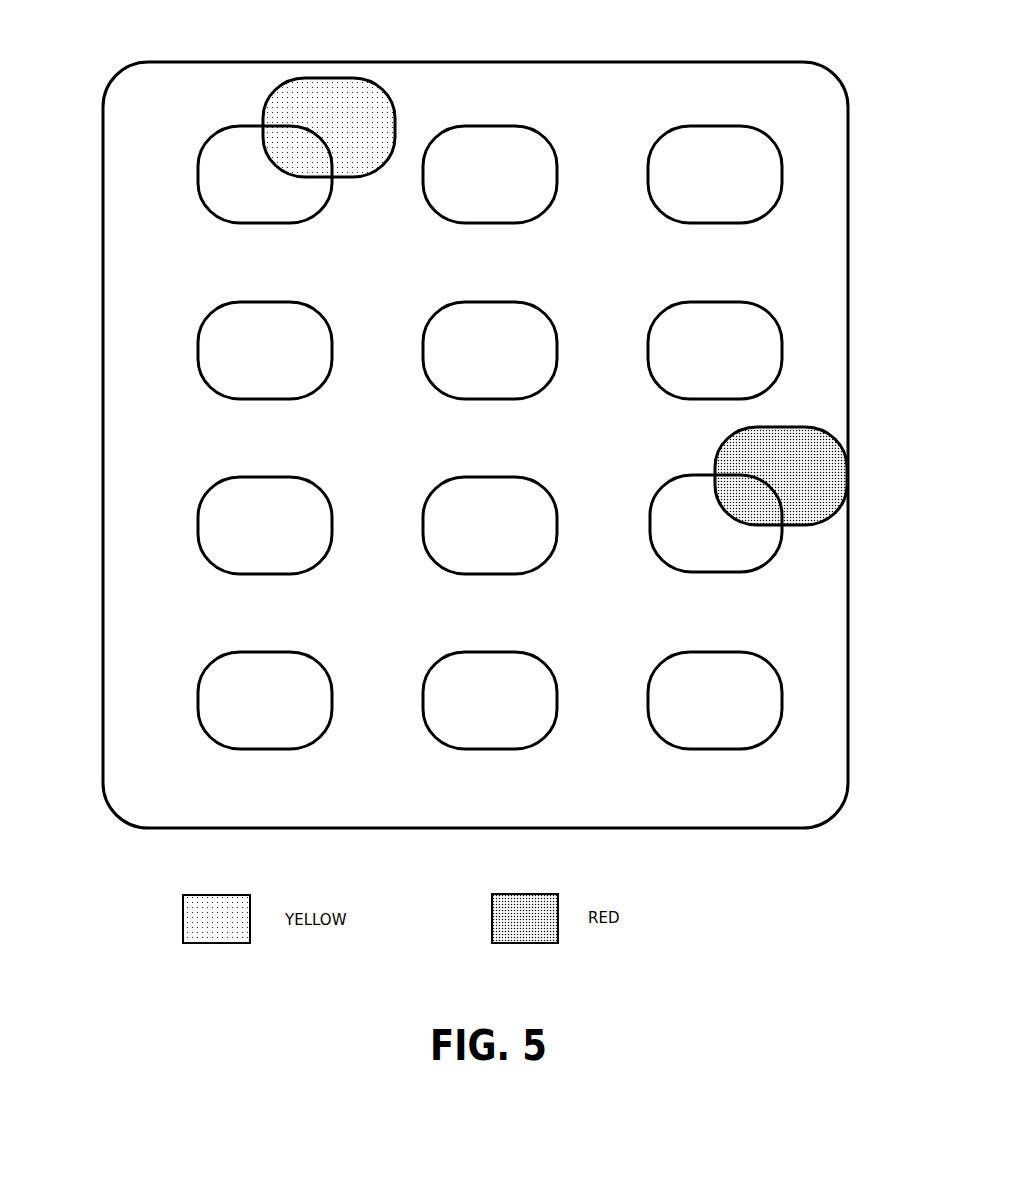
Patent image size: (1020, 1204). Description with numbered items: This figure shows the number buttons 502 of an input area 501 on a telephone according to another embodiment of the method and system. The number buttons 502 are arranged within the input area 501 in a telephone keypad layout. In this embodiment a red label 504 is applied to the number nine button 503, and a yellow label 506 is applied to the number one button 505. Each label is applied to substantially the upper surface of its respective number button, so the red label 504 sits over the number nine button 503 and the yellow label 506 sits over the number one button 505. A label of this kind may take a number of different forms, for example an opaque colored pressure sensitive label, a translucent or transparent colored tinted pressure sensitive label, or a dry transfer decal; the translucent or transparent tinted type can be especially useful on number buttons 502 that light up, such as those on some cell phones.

The input area 501 is at (638, 827).
The number buttons 502 is at (183, 365).
The number 9 button 503 is at (770, 560).
The red label 504 is at (818, 428).
The number 1 button 505 is at (198, 200).
The yellow label 506 is at (327, 78).